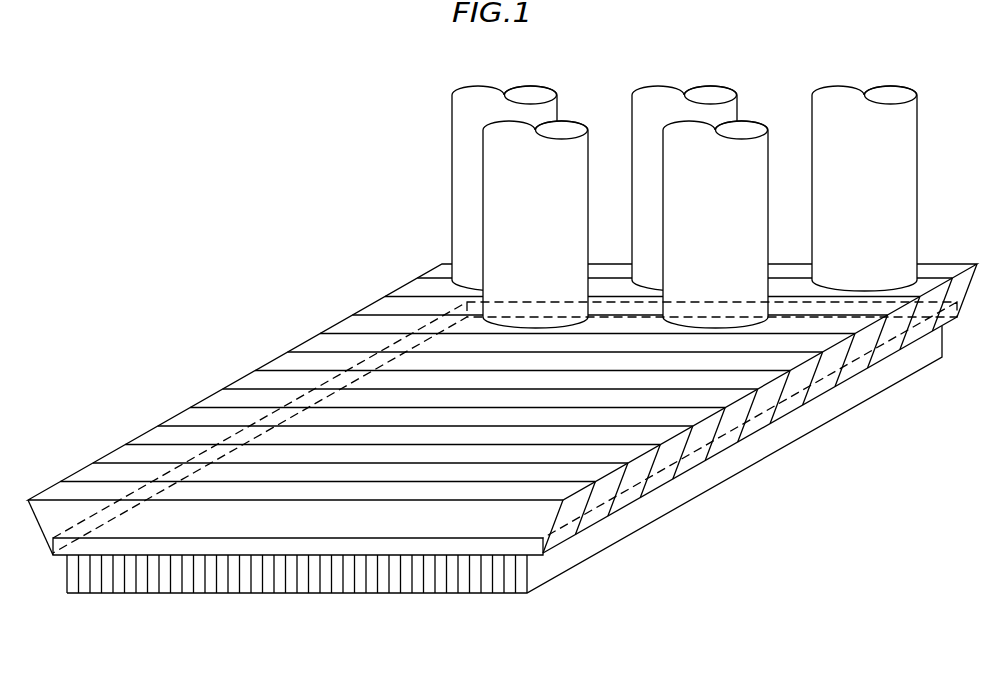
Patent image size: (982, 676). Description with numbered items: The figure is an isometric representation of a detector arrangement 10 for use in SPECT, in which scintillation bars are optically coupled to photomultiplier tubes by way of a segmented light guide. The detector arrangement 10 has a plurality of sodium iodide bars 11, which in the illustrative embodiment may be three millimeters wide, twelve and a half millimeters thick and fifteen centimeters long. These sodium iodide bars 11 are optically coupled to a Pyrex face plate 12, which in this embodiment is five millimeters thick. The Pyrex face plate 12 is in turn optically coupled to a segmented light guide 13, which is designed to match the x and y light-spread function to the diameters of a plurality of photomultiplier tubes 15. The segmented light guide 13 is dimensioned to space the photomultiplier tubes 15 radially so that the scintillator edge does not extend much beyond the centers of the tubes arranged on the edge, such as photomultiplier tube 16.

The detector arrangement 10 is at (502, 423).
The sodium iodide bars 11 is at (88, 580).
The Pyrex face plate 12 is at (463, 547).
The segmented light guide 13 is at (893, 348).
The photomultiplier tubes 15 is at (717, 207).
The photomultiplier tube 16 is at (888, 205).